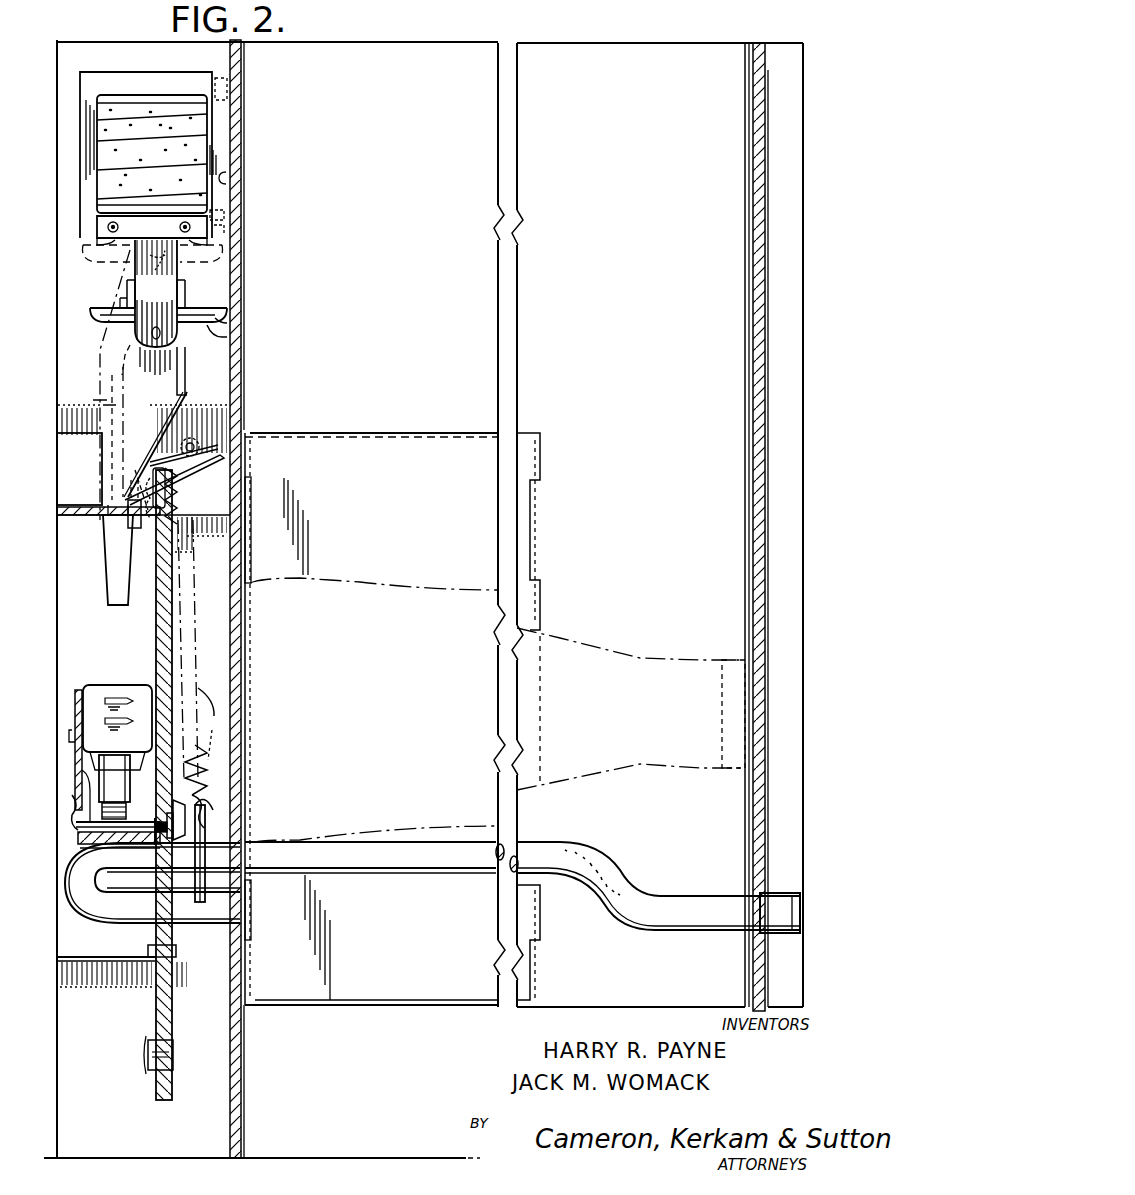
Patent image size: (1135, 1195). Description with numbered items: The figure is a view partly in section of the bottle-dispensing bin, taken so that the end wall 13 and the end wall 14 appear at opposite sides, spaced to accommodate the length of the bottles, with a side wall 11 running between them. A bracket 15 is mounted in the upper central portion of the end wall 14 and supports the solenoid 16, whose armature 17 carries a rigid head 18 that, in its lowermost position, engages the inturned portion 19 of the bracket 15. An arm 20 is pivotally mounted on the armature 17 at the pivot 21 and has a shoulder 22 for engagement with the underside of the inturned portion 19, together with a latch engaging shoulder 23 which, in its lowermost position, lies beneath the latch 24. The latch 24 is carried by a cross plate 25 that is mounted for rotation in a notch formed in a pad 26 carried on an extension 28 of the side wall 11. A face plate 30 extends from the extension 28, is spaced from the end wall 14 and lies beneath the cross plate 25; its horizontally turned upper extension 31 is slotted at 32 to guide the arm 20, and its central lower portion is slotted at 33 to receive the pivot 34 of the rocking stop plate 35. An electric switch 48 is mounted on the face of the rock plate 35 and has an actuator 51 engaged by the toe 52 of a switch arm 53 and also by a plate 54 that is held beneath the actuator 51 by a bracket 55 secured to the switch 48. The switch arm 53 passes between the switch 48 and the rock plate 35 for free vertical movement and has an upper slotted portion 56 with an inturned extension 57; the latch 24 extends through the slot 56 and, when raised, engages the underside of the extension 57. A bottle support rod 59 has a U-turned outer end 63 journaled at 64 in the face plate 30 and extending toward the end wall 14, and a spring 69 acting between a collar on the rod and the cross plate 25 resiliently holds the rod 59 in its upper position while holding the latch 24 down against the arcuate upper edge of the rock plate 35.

The side wall 11 is at (438, 50).
The end wall 13 is at (760, 327).
The end wall 14 is at (236, 355).
The bracket 15 is at (230, 178).
The solenoid 16 is at (205, 154).
The armature 17 is at (160, 290).
The rigid head 18 is at (208, 320).
The inturned portion 19 is at (223, 331).
The arm 20 is at (162, 379).
The pivot 21 is at (120, 336).
The shoulder 22 is at (185, 392).
The latch engaging shoulder 23 is at (128, 535).
The latch 24 is at (138, 510).
The cross plate 25 is at (174, 489).
The pad 26 is at (200, 440).
The extension 28 is at (100, 50).
The face plate 30 is at (180, 576).
The horizontally turned upper extension 31 is at (79, 469).
The slot 32 is at (90, 517).
The slot 33 is at (200, 771).
The pivot 34 is at (185, 832).
The rocking stop plate 35 is at (165, 968).
The electric switch 48 is at (108, 688).
The actuator 51 is at (114, 787).
The toe 52 is at (69, 802).
The switch arm 53 is at (158, 680).
The plate 54 is at (130, 842).
The bracket 55 is at (78, 692).
The upper slotted portion 56 is at (155, 468).
The inturned extension 57 is at (188, 440).
The bottle support rod 59 is at (600, 866).
The U-turned outer end 63 is at (152, 883).
The journal 64 is at (172, 906).
The spring 69 is at (211, 724).